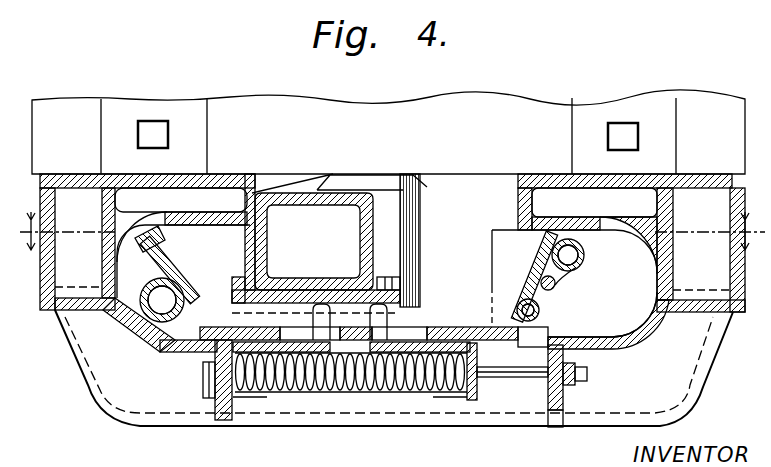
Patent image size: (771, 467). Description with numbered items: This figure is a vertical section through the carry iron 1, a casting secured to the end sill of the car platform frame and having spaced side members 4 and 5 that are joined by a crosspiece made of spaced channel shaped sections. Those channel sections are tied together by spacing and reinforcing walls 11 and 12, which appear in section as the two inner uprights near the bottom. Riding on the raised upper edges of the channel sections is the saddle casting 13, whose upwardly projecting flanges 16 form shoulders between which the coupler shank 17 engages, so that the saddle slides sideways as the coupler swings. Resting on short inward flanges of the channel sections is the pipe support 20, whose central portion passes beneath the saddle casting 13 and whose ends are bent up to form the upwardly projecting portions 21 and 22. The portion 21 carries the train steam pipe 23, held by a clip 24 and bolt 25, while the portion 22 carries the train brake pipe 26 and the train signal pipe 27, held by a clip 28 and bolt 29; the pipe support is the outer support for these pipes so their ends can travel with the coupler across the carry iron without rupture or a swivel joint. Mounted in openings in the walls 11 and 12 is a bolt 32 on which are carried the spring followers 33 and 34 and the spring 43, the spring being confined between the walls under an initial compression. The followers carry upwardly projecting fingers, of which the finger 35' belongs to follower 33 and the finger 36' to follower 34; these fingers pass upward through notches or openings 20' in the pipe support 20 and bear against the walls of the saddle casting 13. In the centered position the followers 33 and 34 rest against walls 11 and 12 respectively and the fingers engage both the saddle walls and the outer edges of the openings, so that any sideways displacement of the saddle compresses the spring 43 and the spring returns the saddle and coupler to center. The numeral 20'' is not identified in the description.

The carry iron 1 is at (663, 421).
The side member 4 is at (40, 200).
The side member 5 is at (386, 231).
The spacing and reinforcing wall 11 is at (565, 413).
The spacing and reinforcing wall 12 is at (222, 398).
The saddle casting 13 is at (398, 297).
The upwardly projecting flange 16 is at (251, 278).
The coupler shank 17 is at (372, 229).
The pipe support 20 is at (341, 307).
The notch or opening 20' is at (314, 241).
The base plate portion 20'' is at (487, 325).
The upwardly projecting portion 21 is at (176, 282).
The upwardly projecting portion 22 is at (540, 252).
The train steam pipe 23 is at (157, 320).
The clip 24 is at (153, 306).
The bolt 25 is at (142, 263).
The train brake pipe 26 is at (580, 258).
The train signal pipe 27 is at (540, 312).
The clip 28 is at (580, 272).
The bolt 29 is at (555, 285).
The bolt 32 is at (523, 373).
The spring follower 33 is at (477, 395).
The spring follower 34 is at (227, 400).
The finger 35' is at (361, 298).
The finger 36' is at (306, 298).
The spring 43 is at (373, 393).